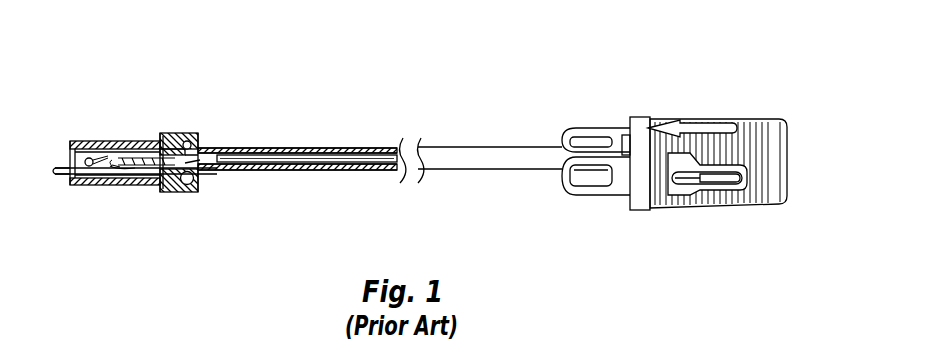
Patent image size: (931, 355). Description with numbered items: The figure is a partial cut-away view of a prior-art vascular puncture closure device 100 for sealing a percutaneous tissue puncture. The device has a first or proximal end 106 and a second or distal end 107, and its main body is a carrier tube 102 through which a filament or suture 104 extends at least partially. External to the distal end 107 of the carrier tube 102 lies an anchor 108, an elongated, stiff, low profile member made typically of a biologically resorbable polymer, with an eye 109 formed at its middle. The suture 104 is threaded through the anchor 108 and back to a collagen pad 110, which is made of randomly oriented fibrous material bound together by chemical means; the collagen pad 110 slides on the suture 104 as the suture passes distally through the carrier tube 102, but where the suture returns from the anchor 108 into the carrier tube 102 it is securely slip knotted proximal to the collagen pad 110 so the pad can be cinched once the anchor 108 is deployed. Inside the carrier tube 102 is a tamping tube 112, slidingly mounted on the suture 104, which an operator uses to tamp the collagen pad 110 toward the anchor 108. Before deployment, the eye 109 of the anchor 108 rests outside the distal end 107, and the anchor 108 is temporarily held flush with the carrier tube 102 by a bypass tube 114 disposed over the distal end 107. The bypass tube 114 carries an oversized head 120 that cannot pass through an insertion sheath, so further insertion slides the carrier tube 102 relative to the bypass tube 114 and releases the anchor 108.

The vascular puncture closure device 100 is at (420, 148).
The carrier tube 102 is at (380, 153).
The suture 104 is at (203, 158).
The proximal end 106 is at (618, 112).
The distal end 107 is at (127, 130).
The anchor 108 is at (64, 173).
The eye 109 is at (135, 168).
The collagen pad 110 is at (142, 163).
The tamping tube 112 is at (280, 158).
The bypass tube 114 is at (130, 172).
The oversized head 120 is at (188, 192).